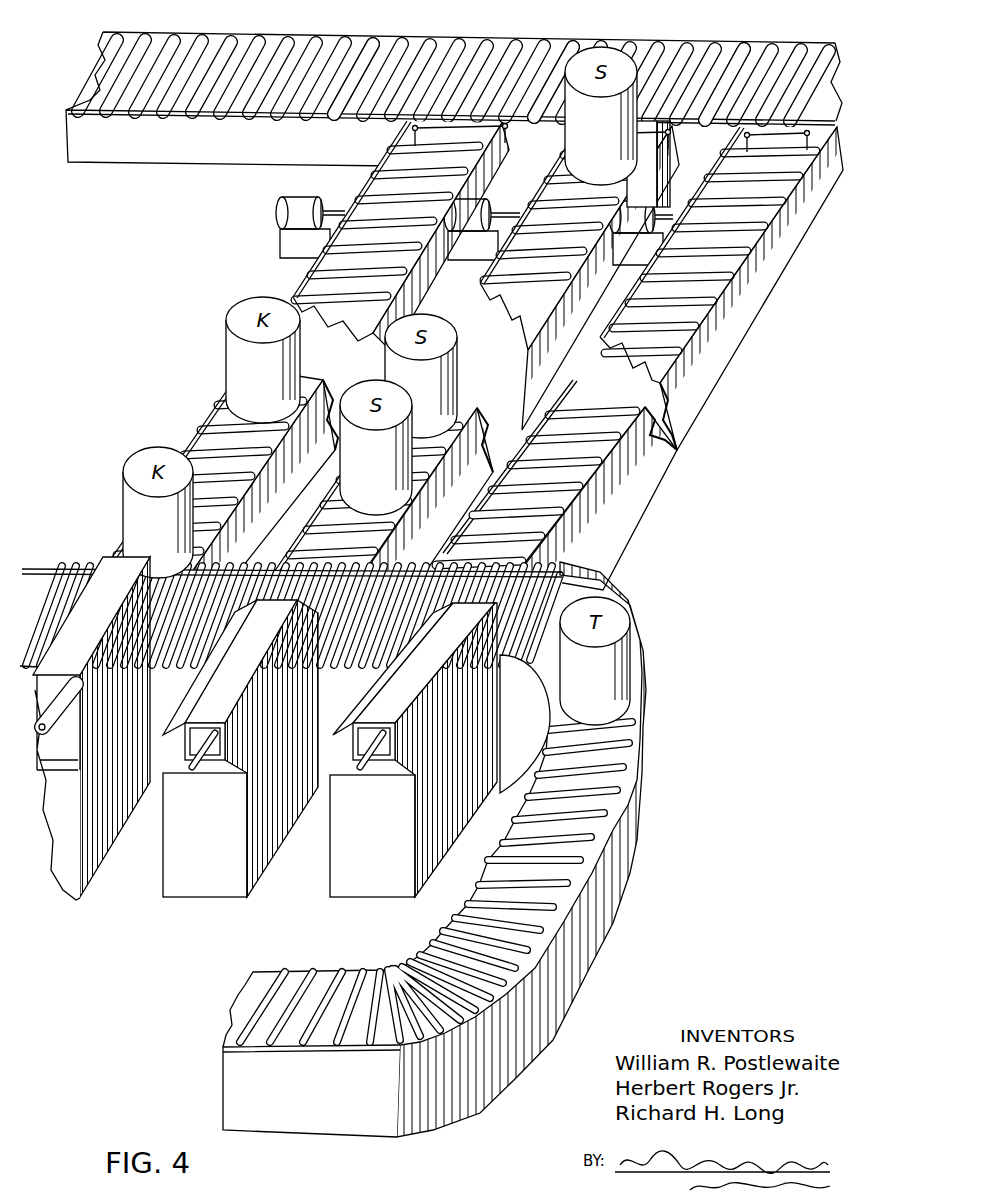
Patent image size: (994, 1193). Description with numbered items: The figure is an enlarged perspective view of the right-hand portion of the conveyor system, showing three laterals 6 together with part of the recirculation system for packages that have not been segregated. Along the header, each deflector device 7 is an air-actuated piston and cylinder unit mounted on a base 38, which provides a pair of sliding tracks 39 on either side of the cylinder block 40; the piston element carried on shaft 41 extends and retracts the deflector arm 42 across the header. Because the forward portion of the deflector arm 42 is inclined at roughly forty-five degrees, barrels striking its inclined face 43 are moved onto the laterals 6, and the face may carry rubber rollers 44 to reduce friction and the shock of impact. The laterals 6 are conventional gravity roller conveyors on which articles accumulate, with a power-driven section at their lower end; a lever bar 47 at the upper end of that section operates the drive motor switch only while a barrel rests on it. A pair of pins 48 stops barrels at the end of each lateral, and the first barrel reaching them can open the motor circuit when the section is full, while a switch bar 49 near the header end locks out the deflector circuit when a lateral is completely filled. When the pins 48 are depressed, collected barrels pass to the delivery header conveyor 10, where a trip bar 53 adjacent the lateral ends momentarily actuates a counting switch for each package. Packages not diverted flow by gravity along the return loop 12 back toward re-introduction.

The laterals 6 is at (205, 418).
The deflector device 7 is at (382, 884).
The delivery header conveyor 10 is at (338, 33).
The return loop 12 is at (498, 853).
The base 38 is at (330, 870).
The sliding tracks 39 is at (68, 760).
The cylinder block 40 is at (382, 762).
The shaft 41 is at (363, 773).
The deflector arm 42 is at (310, 690).
The inclined face 43 is at (425, 622).
The rubber rollers 44 is at (107, 578).
The lever bar 47 is at (317, 263).
The pins 48 is at (467, 136).
The switch bar 49 is at (560, 528).
The trip bar 53 is at (366, 42).